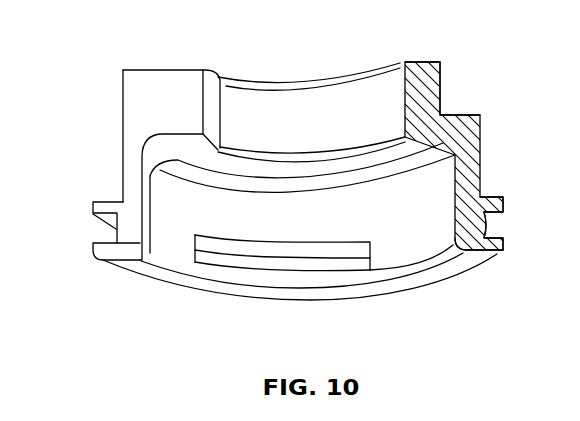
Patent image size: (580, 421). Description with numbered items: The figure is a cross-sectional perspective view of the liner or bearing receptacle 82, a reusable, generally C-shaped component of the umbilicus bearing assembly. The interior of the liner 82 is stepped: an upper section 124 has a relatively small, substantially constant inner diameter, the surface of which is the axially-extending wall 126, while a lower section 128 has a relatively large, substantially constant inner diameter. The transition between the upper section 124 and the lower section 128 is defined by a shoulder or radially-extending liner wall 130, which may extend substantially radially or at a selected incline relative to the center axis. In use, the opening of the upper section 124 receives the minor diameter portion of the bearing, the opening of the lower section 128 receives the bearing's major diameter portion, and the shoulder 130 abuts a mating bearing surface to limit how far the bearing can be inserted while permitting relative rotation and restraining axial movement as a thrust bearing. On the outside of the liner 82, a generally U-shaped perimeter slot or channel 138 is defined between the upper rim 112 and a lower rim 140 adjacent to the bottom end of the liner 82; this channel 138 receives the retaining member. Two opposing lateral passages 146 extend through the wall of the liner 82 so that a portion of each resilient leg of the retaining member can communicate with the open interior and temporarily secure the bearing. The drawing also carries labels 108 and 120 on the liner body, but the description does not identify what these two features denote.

The liner 82 is at (229, 60).
The flat wall portion 108 is at (148, 70).
The outer side surface 120 is at (122, 107).
The axially-extending wall 126 is at (306, 133).
The shoulder 130 is at (365, 163).
The upper section 124 is at (441, 90).
The lower section 128 is at (482, 156).
The upper rim 112 is at (490, 197).
The channel 138 is at (497, 231).
The lower rim 140 is at (486, 250).
The lateral passages 146 is at (331, 276).